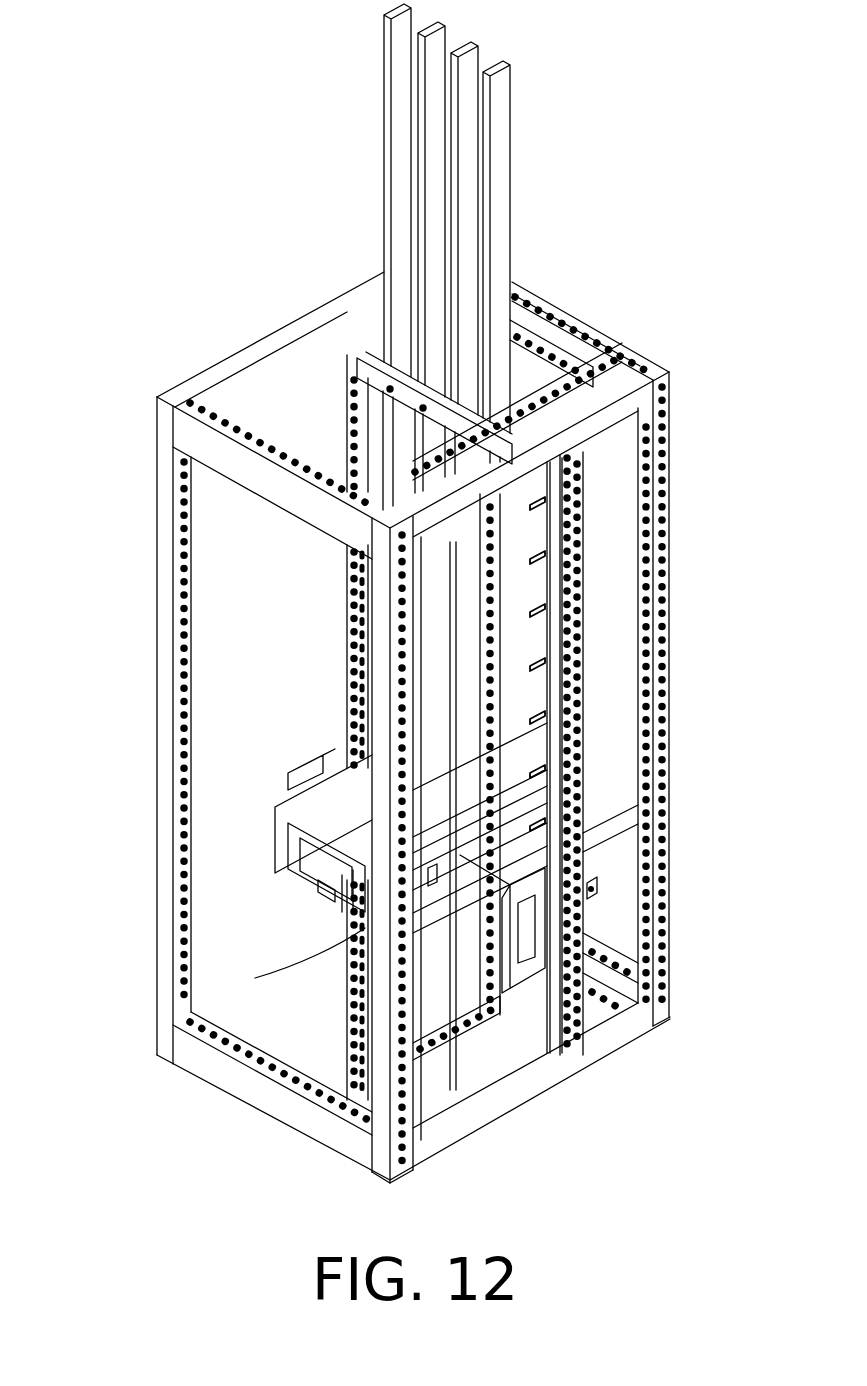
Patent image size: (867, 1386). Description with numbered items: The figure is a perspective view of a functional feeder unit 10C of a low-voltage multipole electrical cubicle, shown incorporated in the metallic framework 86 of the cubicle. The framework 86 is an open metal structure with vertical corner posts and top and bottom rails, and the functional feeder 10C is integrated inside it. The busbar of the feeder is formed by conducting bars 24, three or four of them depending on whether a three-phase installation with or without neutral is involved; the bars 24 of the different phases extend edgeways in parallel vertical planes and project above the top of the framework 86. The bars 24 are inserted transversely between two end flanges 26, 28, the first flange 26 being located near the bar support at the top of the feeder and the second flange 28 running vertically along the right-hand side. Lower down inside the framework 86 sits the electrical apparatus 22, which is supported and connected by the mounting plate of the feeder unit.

The functional feeder unit 10C is at (310, 712).
The electrical apparatus 22 is at (367, 933).
The conducting bars 24 is at (503, 147).
The end flange 26 is at (375, 413).
The end flange 28 is at (530, 530).
The metallic framework 86 is at (163, 700).